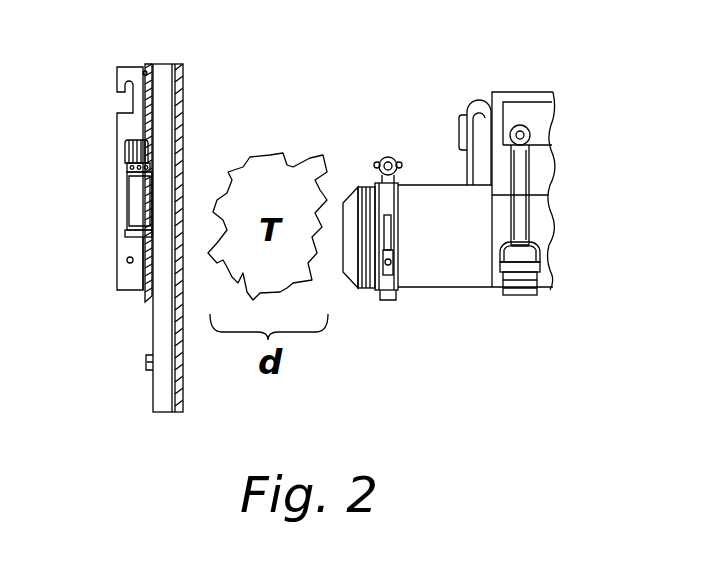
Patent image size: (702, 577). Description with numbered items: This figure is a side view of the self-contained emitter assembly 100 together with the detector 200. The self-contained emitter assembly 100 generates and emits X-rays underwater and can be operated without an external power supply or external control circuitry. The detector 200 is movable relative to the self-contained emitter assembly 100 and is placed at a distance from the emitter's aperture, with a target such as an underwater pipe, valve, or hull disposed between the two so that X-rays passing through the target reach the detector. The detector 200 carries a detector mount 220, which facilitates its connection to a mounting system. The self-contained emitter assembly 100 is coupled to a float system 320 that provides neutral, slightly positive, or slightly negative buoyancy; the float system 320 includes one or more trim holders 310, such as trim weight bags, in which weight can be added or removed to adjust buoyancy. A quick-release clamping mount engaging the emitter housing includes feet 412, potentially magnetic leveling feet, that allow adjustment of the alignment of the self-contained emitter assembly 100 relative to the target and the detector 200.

The self-contained emitter assembly 100 is at (449, 207).
The detector 200 is at (183, 104).
The detector mount 220 is at (117, 266).
The trim holder 310 is at (462, 132).
The float system 320 is at (510, 92).
The foot 412 is at (388, 301).